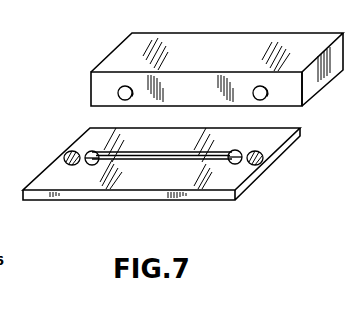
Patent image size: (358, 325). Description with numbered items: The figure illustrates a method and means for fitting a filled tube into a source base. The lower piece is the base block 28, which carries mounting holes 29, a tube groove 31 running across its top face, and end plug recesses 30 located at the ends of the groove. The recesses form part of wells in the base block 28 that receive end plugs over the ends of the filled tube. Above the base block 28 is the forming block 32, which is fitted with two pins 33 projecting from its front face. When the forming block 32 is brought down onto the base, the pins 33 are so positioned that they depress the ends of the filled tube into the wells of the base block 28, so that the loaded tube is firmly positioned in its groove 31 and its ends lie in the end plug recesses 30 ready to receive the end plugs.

The base block 28 is at (213, 196).
The mounting holes 29 is at (262, 160).
The end plug recesses 30 is at (95, 154).
The tube groove 31 is at (135, 161).
The forming block 32 is at (272, 48).
The pins 33 is at (118, 91).